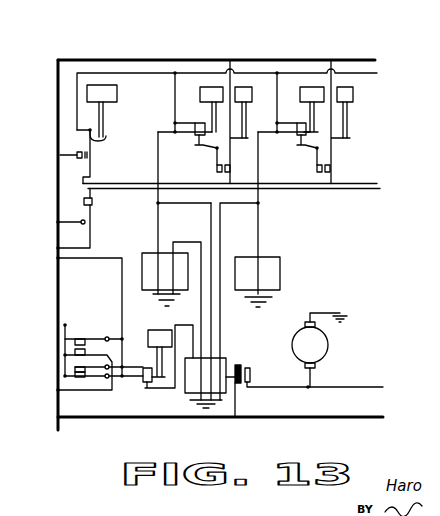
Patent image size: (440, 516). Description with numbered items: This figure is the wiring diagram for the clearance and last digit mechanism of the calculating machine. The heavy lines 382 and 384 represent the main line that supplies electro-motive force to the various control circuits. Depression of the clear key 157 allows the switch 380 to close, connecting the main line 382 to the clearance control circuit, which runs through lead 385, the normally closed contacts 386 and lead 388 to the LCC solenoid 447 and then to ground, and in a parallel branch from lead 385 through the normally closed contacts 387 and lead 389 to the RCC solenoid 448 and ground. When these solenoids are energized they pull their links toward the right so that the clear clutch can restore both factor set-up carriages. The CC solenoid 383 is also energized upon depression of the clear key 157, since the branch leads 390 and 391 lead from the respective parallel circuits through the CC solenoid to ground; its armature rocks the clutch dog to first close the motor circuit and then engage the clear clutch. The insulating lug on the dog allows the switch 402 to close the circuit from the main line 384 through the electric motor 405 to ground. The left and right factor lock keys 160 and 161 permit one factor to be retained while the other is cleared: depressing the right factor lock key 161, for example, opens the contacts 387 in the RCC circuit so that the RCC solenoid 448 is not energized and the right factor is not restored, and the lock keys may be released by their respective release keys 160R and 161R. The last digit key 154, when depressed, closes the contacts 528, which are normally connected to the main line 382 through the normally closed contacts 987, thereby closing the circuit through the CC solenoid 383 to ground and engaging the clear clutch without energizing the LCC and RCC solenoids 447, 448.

The last digit key 154 is at (153, 329).
The clear key 157 is at (118, 93).
The left factor lock key 160 is at (210, 86).
The release key for left factor lock key 160R is at (248, 86).
The right factor lock key 161 is at (315, 86).
The release key for right factor lock key 161R is at (348, 86).
The switch 380 is at (88, 155).
The main line 382 is at (57, 179).
The CC solenoid 383 is at (223, 360).
The main line 384 is at (314, 416).
The lead 385 is at (77, 100).
The normally closed contacts 386 is at (175, 123).
The normally closed contacts 387 is at (305, 123).
The lead 388 is at (156, 203).
The lead 389 is at (260, 204).
The branch lead 390 is at (209, 222).
The branch lead 391 is at (218, 238).
The switch 402 is at (243, 364).
The electric motor 405 is at (329, 346).
The LCC solenoid 447 is at (142, 262).
The RCC solenoid 448 is at (281, 274).
The contacts 528 is at (140, 383).
The normally closed contacts 987 is at (90, 372).